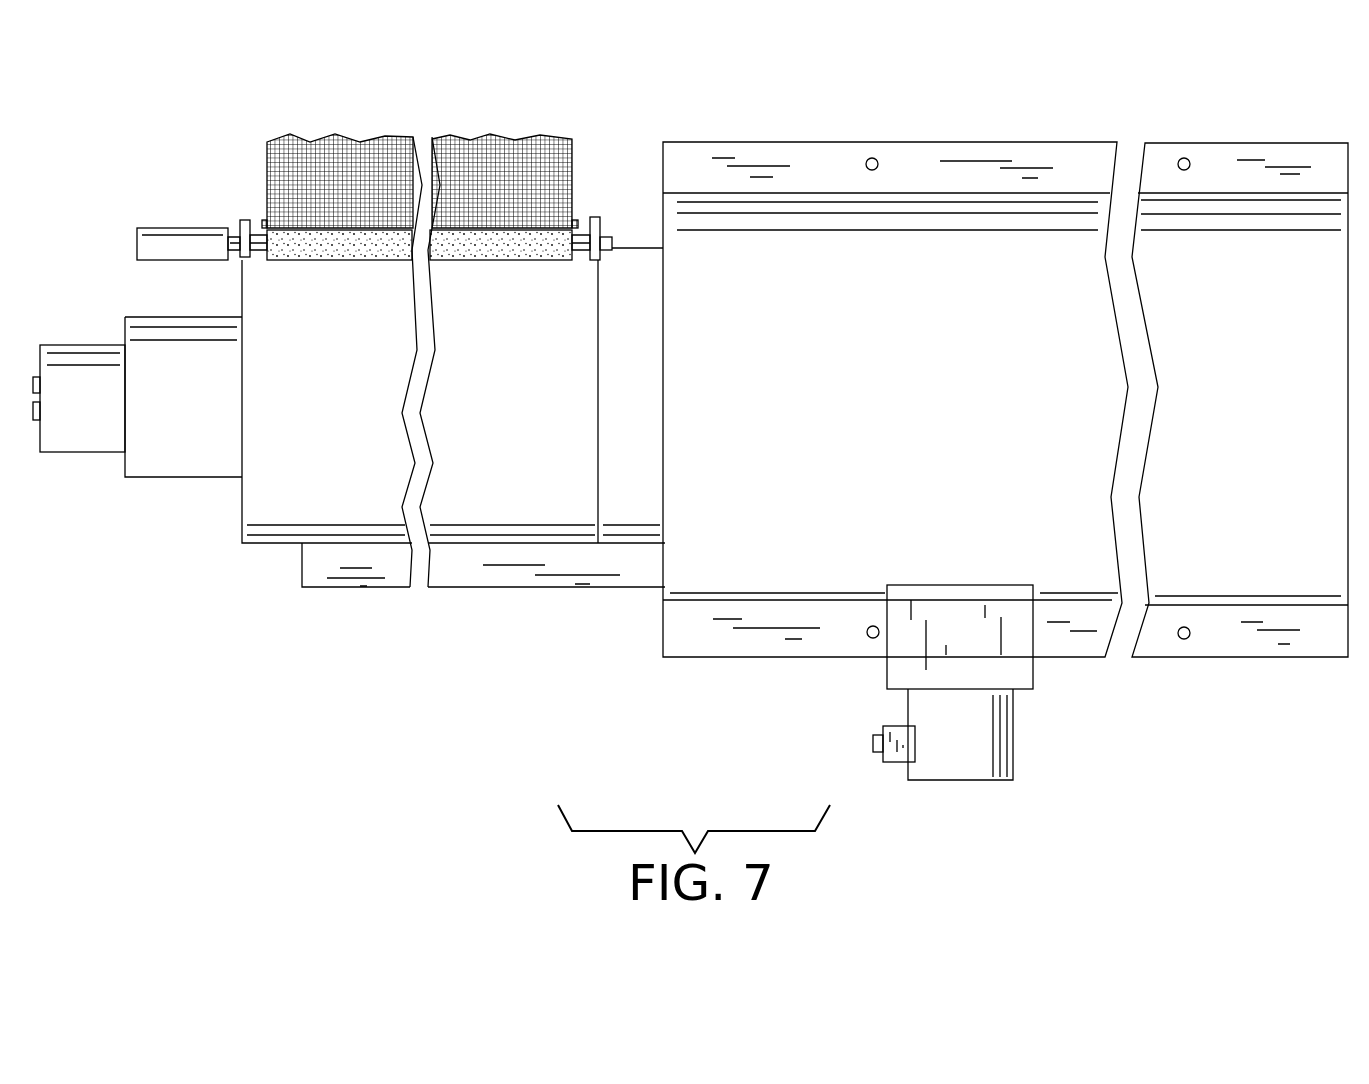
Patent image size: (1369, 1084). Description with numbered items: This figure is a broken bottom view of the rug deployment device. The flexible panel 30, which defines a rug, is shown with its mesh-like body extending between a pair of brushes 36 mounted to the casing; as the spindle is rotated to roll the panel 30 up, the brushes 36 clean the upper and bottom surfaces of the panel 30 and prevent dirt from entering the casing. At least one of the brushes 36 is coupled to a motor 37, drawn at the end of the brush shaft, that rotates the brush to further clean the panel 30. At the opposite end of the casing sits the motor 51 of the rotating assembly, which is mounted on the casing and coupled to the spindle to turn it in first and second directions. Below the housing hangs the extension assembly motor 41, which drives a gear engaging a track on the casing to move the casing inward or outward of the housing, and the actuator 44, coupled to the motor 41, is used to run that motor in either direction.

The flexible panel 30 is at (492, 160).
The brushes 36 is at (565, 245).
The motor 37 is at (158, 228).
The motor 51 is at (78, 453).
The motor 41 is at (997, 781).
The actuator 44 is at (893, 763).